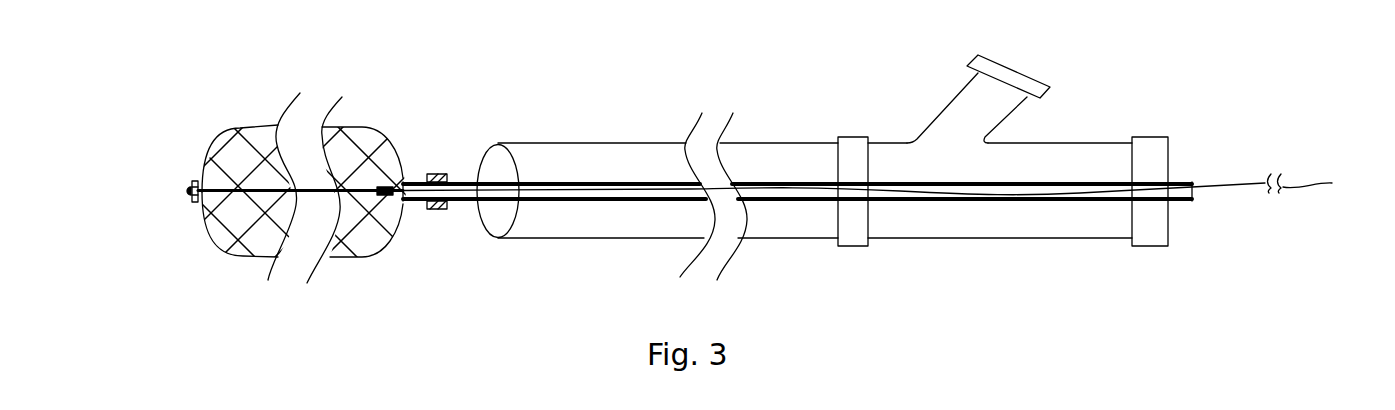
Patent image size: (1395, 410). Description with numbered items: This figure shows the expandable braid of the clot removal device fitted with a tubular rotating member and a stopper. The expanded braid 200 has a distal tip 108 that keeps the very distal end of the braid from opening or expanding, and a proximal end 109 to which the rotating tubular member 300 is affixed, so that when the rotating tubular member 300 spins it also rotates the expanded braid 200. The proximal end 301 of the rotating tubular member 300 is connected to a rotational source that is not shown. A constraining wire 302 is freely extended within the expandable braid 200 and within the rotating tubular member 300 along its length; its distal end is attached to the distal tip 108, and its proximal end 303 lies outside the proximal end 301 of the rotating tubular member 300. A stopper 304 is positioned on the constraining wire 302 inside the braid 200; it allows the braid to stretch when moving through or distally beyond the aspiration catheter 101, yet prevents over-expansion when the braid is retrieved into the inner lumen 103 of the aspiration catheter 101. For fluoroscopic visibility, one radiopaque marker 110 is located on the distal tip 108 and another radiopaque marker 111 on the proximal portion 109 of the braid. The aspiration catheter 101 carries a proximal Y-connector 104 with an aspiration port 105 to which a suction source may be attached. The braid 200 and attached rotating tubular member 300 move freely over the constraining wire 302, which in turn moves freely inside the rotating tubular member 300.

The aspiration catheter 101 is at (833, 179).
The axial lumen 103 is at (493, 211).
The proximal Y-connector 104 is at (1000, 282).
The aspiration port 105 is at (952, 99).
The distal tip 108 is at (155, 141).
The proximal end of the expandable braid 109 is at (400, 167).
The radiopaque marker 110 is at (270, 235).
The radiopaque marker 111 is at (462, 156).
The expanded braid 200 is at (306, 209).
The rotating tubular member 300 is at (785, 148).
The proximal end of the rotating tubular member 301 is at (1213, 244).
The constraining wire 302 is at (243, 215).
The proximal end of the constraining wire 303 is at (787, 220).
The stopper 304 is at (415, 242).